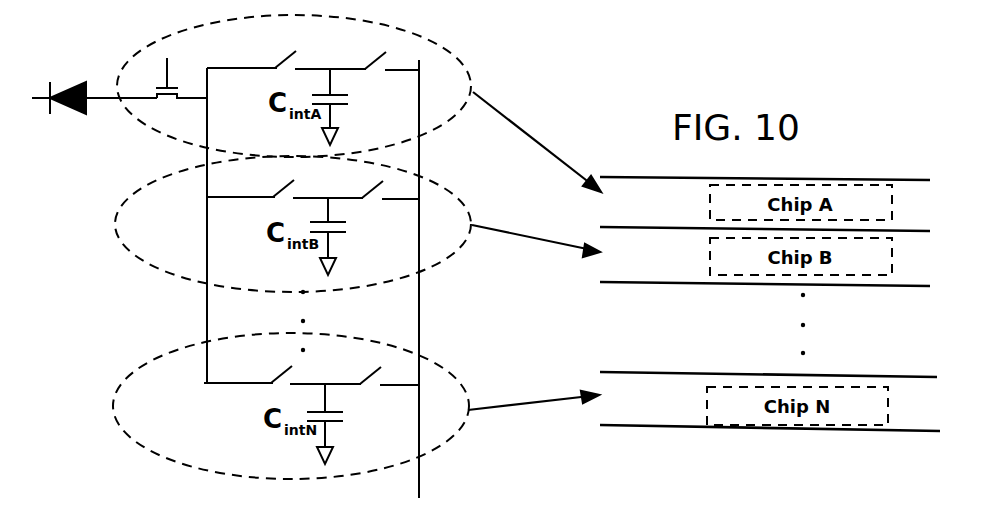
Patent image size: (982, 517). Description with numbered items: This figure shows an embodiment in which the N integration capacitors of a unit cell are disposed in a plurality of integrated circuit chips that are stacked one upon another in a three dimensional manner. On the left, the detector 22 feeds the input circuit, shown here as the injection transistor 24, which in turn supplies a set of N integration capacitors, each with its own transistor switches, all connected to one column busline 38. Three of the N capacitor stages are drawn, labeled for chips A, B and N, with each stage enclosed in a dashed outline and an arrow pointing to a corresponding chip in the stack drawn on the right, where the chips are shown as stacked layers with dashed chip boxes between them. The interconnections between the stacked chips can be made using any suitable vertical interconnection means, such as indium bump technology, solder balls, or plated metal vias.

The detector 22 is at (94, 76).
The injection transistor 24 is at (167, 105).
The column busline 38 is at (420, 342).